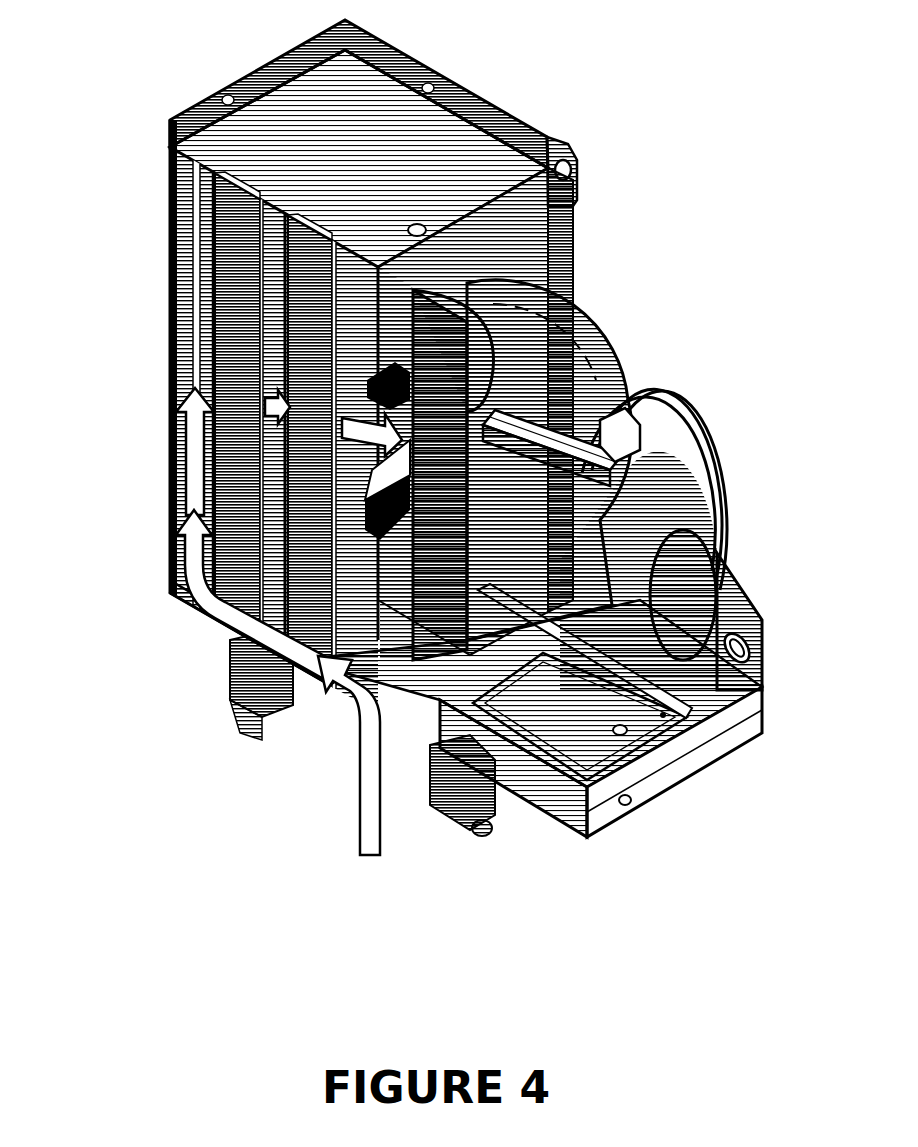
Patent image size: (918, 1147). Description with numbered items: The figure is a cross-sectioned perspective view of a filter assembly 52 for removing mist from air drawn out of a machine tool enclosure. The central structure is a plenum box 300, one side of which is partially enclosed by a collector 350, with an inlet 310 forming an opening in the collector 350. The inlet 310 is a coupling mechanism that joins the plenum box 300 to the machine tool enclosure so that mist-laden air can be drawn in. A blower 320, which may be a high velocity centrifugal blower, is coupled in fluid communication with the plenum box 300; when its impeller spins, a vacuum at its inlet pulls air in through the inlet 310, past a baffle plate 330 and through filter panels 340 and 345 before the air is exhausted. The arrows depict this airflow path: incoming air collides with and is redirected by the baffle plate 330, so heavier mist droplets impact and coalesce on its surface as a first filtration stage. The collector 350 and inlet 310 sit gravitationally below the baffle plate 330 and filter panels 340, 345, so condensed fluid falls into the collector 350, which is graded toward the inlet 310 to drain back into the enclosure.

The filter assembly 52 is at (759, 44).
The plenum box 300 is at (190, 125).
The filter panel 340 is at (240, 250).
The filter panel 345 is at (305, 335).
The blower 320 is at (590, 352).
The collector 350 is at (185, 605).
The baffle plate 330 is at (360, 648).
The inlet 310 is at (435, 820).